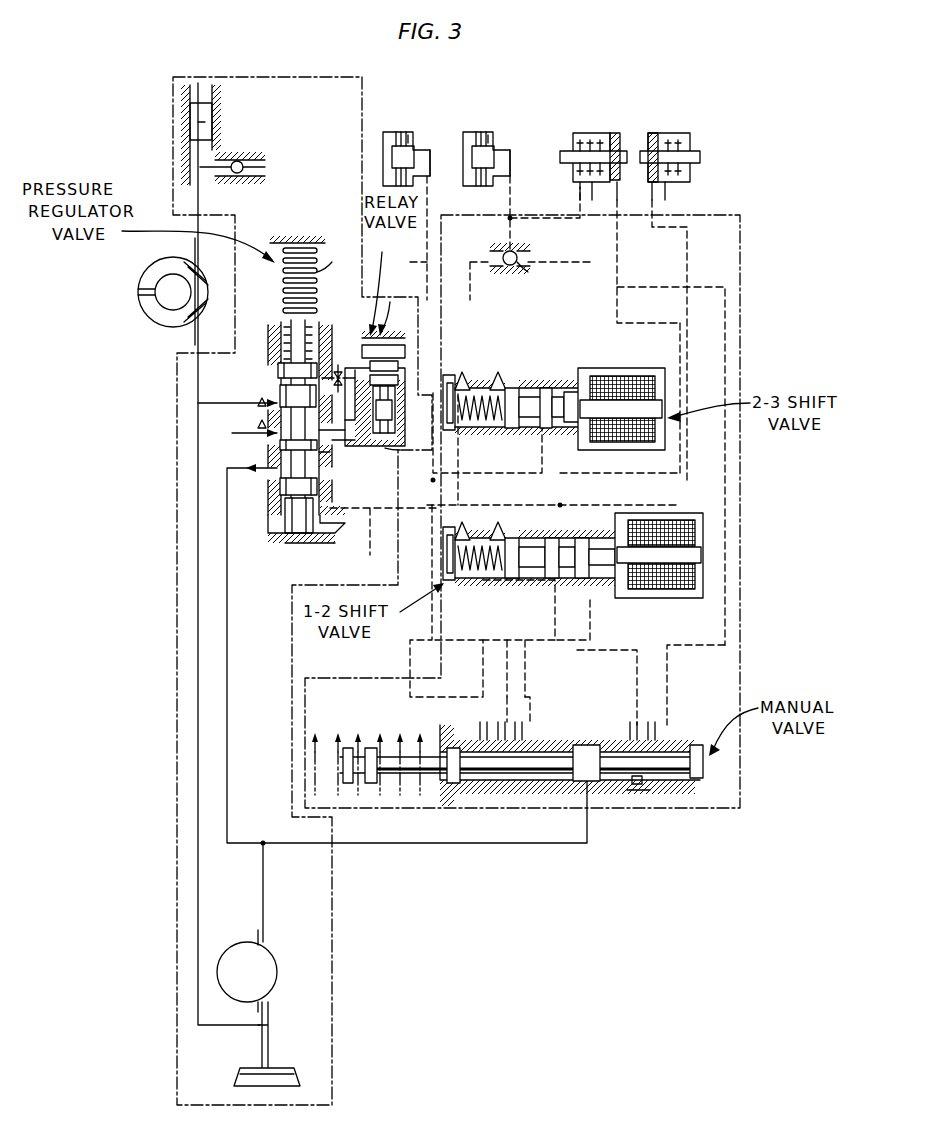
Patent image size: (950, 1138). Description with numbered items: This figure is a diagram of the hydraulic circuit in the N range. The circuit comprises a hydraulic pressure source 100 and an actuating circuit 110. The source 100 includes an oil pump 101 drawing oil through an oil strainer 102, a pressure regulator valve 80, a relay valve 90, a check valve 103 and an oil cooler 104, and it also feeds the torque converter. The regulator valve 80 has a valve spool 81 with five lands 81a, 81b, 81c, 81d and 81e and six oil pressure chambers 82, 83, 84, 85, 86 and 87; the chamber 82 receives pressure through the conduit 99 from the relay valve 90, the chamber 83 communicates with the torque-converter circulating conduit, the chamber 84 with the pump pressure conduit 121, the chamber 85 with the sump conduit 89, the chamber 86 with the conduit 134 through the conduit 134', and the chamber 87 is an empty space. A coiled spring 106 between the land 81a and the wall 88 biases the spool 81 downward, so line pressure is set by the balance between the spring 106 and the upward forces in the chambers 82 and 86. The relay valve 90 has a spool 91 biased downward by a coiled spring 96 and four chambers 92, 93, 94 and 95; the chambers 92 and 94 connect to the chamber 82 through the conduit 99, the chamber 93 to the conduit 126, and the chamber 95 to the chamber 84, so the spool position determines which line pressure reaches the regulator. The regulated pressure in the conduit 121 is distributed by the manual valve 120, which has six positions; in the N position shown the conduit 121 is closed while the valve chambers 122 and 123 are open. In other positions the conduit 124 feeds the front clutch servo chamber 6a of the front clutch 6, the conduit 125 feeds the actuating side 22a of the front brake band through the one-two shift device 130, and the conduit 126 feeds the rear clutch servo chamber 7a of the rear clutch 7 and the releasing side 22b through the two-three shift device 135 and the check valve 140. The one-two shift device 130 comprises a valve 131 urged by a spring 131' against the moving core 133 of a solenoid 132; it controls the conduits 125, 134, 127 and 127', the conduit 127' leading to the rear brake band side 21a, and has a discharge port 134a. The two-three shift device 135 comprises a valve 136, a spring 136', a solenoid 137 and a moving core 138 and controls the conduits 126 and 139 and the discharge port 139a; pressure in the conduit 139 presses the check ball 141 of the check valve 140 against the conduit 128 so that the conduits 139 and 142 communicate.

The front clutch 6 is at (402, 132).
The front clutch servo chamber 6a is at (416, 140).
The rear clutch 7 is at (485, 132).
The rear clutch servo chamber 7a is at (497, 145).
The clutch servo 21a is at (654, 133).
The actuating side of the front brake band 22a is at (618, 133).
The front brake releasing side 22b is at (592, 133).
The pressure regulator valve 80 is at (272, 324).
The valve spool 81 is at (305, 325).
The land 81a is at (278, 368).
The land 81b is at (280, 398).
The land 81c is at (280, 446).
The land 81d is at (280, 486).
The land 81e is at (290, 533).
The oil pressure chamber 82 is at (277, 375).
The oil pressure chamber 83 is at (258, 414).
The oil pressure chamber 84 is at (232, 433).
The oil pressure chamber 85 is at (325, 455).
The oil pressure chamber 86 is at (275, 525).
The chamber 87 is at (302, 545).
The wall 88 is at (300, 247).
The sump or discharge conduit 89 is at (198, 672).
The relay valve 90 is at (375, 361).
The valve spool 91 is at (385, 448).
The oil pressure chamber 92 is at (398, 392).
The oil pressure chamber 93 is at (398, 408).
The oil pressure chamber 94 is at (343, 436).
The oil pressure chamber 95 is at (355, 442).
The coiled spring 96 is at (382, 344).
The conduit 99 is at (338, 364).
The hydraulic pressure source 100 is at (332, 884).
The oil pump 101 is at (272, 963).
The oil strainer 102 is at (288, 1066).
The check valve 103 is at (240, 162).
The oil cooler 104 is at (212, 120).
The coiled spring 106 is at (345, 262).
The actuating circuit 110 is at (700, 810).
The manual shift valve 120 is at (440, 770).
The conduit 121 is at (227, 712).
The valve chamber 122 is at (580, 796).
The valve chamber 123 is at (660, 808).
The hydraulic conduit 124 is at (427, 262).
The hydraulic conduit 125 is at (580, 625).
The hydraulic conduit 126 is at (520, 455).
The conduit 127 is at (560, 652).
The conduit 127' is at (590, 352).
The conduit 128 is at (560, 262).
The 1-2 shift device 130 is at (595, 505).
The valve 131 is at (572, 573).
The spring 131' is at (486, 579).
The solenoid 132 is at (675, 522).
The moving core 133 is at (690, 560).
The conduit 134 is at (642, 422).
The conduit 134' is at (385, 534).
The discharge port 134a is at (466, 548).
The 2-3 shift device 135 is at (620, 370).
The valve 136 is at (578, 433).
The spring 136' is at (481, 428).
The solenoid 137 is at (628, 380).
The moving core 138 is at (546, 388).
The conduit 139 is at (530, 352).
The discharge port 139a is at (465, 388).
The check valve 140 is at (448, 372).
The check ball 141 is at (528, 272).
The conduit 142 is at (505, 248).